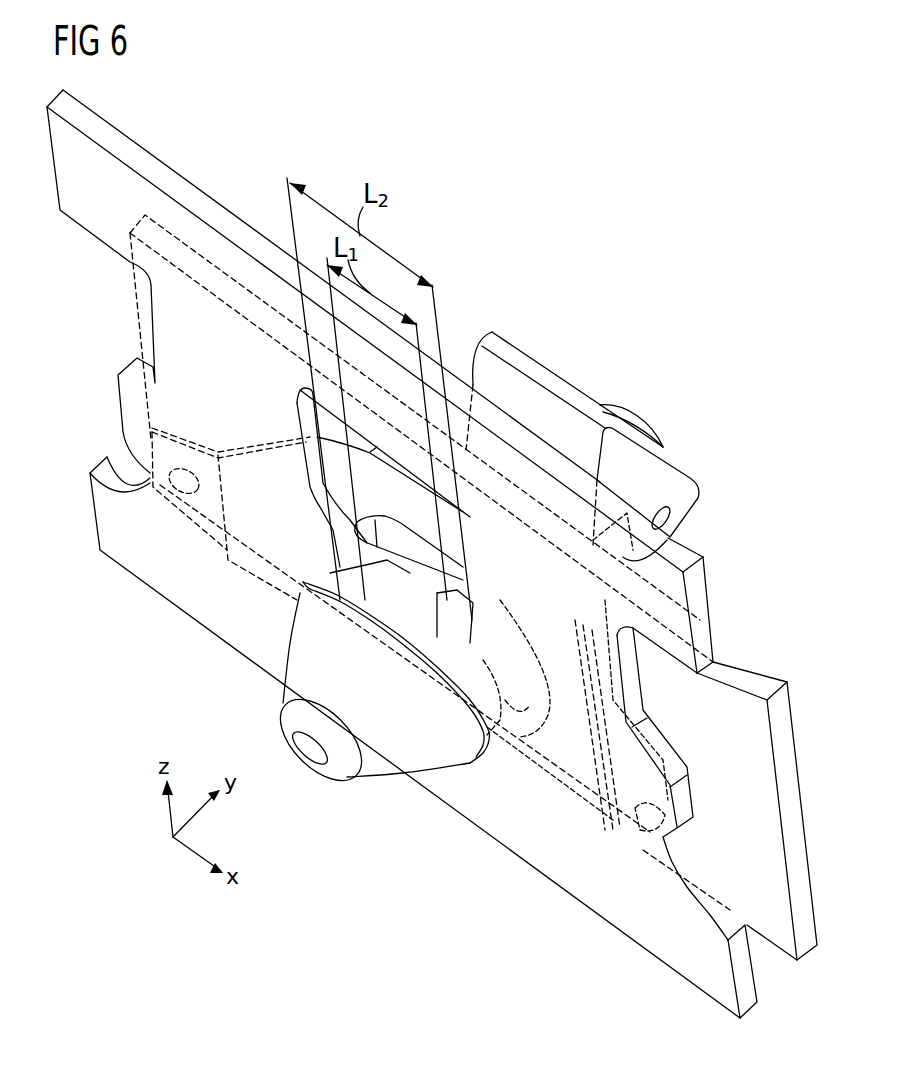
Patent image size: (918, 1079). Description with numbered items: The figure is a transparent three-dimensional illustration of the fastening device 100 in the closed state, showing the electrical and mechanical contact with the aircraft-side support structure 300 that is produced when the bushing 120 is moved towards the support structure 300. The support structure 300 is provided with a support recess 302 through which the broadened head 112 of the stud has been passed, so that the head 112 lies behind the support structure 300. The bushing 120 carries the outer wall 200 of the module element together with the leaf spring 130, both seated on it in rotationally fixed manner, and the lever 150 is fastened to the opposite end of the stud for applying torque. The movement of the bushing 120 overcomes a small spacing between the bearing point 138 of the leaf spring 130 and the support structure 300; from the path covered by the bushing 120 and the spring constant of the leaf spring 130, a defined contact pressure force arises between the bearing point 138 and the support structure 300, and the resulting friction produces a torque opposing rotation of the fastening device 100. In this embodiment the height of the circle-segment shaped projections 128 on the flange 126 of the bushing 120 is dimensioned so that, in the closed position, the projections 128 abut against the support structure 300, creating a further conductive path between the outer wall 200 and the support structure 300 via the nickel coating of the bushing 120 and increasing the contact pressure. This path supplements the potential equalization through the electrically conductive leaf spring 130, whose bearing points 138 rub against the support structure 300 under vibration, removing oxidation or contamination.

The fastening device 100 is at (116, 342).
The broadened head 112 is at (370, 763).
The bushing 120 is at (655, 568).
The flange 126 is at (410, 525).
The circle-segment shaped projections 128 is at (513, 700).
The leaf spring 130 is at (168, 483).
The bearing point 138 is at (645, 825).
The lever 150 is at (660, 470).
The outer wall 200 is at (748, 670).
The support structure 300 is at (157, 578).
The support recess 302 is at (298, 418).